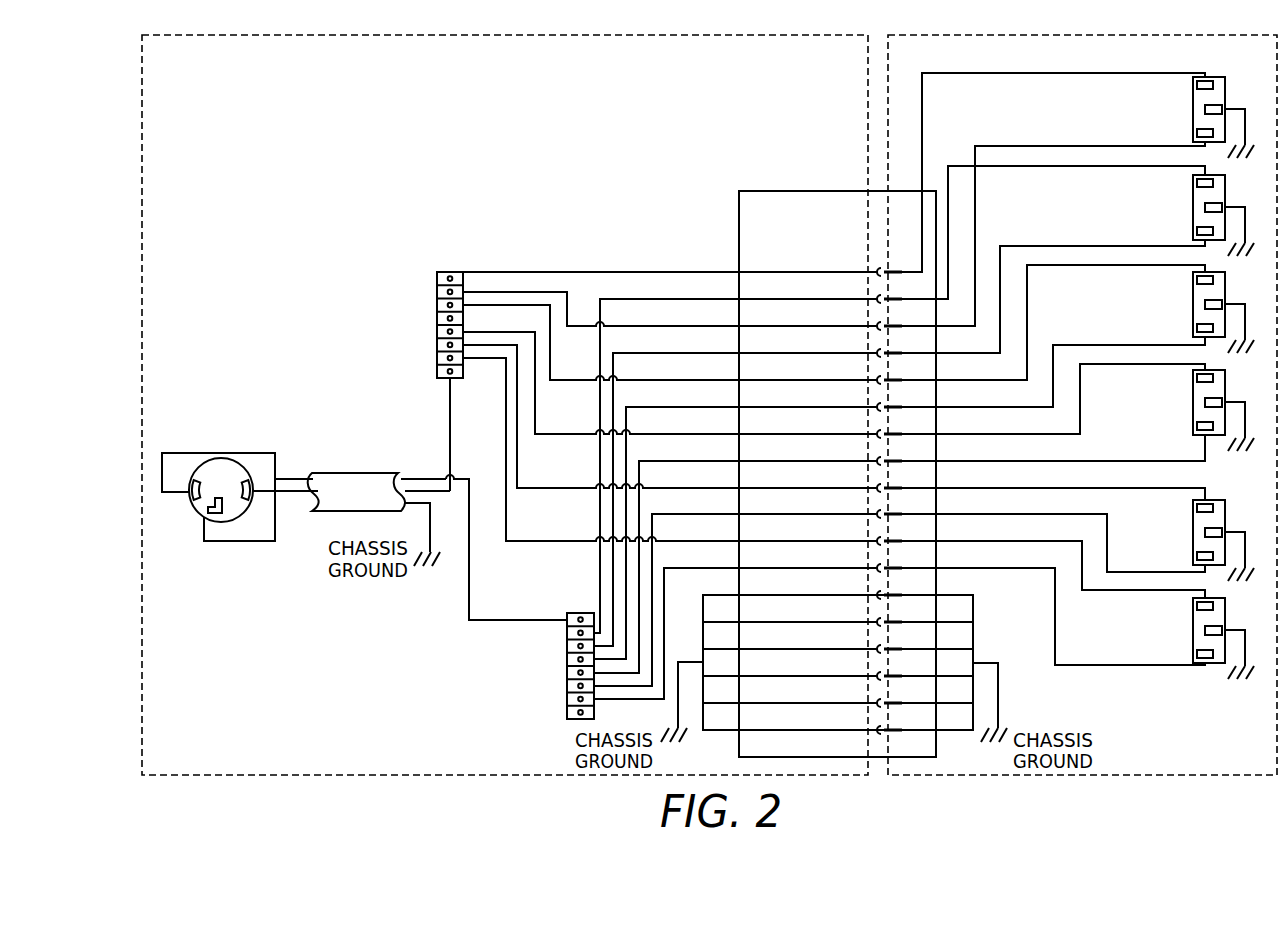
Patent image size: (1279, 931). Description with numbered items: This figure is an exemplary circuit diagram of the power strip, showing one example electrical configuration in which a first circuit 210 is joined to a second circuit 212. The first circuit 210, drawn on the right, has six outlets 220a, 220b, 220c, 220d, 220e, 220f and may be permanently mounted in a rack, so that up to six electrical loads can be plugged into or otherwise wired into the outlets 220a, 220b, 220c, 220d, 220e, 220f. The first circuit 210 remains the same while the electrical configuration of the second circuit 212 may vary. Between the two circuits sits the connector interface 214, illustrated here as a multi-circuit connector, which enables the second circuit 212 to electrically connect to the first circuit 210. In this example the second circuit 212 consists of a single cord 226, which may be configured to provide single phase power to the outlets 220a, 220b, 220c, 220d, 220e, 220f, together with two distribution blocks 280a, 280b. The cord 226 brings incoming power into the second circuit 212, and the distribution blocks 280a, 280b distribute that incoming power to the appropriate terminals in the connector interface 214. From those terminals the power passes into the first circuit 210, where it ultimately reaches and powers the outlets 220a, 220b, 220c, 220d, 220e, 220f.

The first circuit 210 is at (1256, 62).
The second circuit 212 is at (851, 62).
The connector interface 214 is at (738, 230).
The outlet 220a is at (1193, 108).
The outlet 220b is at (1193, 206).
The outlet 220c is at (1193, 303).
The outlet 220d is at (1193, 401).
The outlet 220e is at (1193, 531).
The outlet 220f is at (1193, 629).
The cord 226 is at (220, 452).
The distribution block 280a is at (445, 272).
The distribution block 280b is at (575, 613).